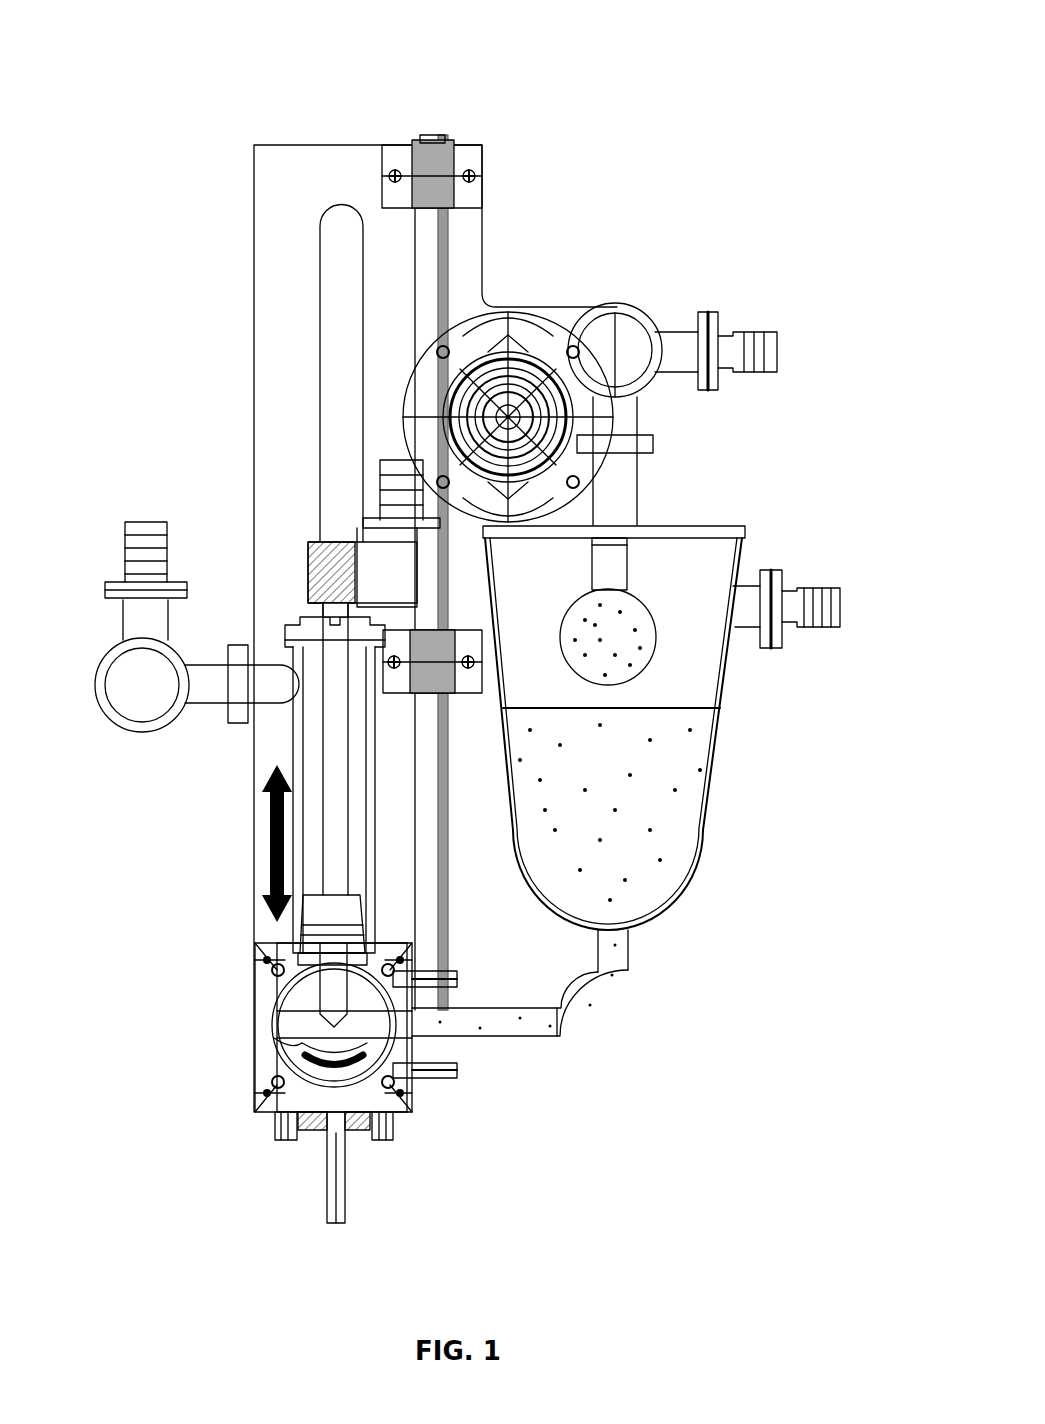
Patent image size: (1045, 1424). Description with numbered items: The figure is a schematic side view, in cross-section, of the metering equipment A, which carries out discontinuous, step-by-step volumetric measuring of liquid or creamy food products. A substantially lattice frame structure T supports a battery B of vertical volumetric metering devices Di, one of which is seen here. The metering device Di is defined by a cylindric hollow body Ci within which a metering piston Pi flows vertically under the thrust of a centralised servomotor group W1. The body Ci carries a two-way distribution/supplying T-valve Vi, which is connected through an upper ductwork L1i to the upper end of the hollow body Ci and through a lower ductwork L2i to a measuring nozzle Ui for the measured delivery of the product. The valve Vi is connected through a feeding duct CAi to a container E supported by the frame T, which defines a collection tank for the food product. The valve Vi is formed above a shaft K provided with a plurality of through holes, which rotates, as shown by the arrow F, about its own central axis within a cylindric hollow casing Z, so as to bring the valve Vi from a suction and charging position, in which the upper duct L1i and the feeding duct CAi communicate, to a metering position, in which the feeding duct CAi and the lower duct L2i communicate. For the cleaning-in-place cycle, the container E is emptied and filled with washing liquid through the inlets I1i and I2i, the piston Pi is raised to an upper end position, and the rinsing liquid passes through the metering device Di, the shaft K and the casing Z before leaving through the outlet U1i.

The metering equipment A is at (553, 190).
The frame structure T is at (218, 182).
The battery B is at (405, 110).
The centralised servomotor group W1 is at (575, 302).
The inlet I2i is at (818, 352).
The inlet I1i is at (852, 605).
The container E is at (710, 771).
The outlet U1i is at (122, 507).
The volumetric metering device Di is at (283, 526).
The metering piston Pi is at (330, 790).
The cylindric hollow body Ci is at (368, 830).
The two-way distribution/supplying T-valve Vi is at (262, 1006).
The cylindric hollow casing Z is at (272, 1047).
The arrow F is at (348, 1068).
The shaft K is at (298, 1054).
The upper ductwork L1i is at (336, 960).
The lower ductwork L2i is at (335, 1103).
The measuring nozzle Ui is at (332, 1190).
The feeding duct CAi is at (576, 1017).